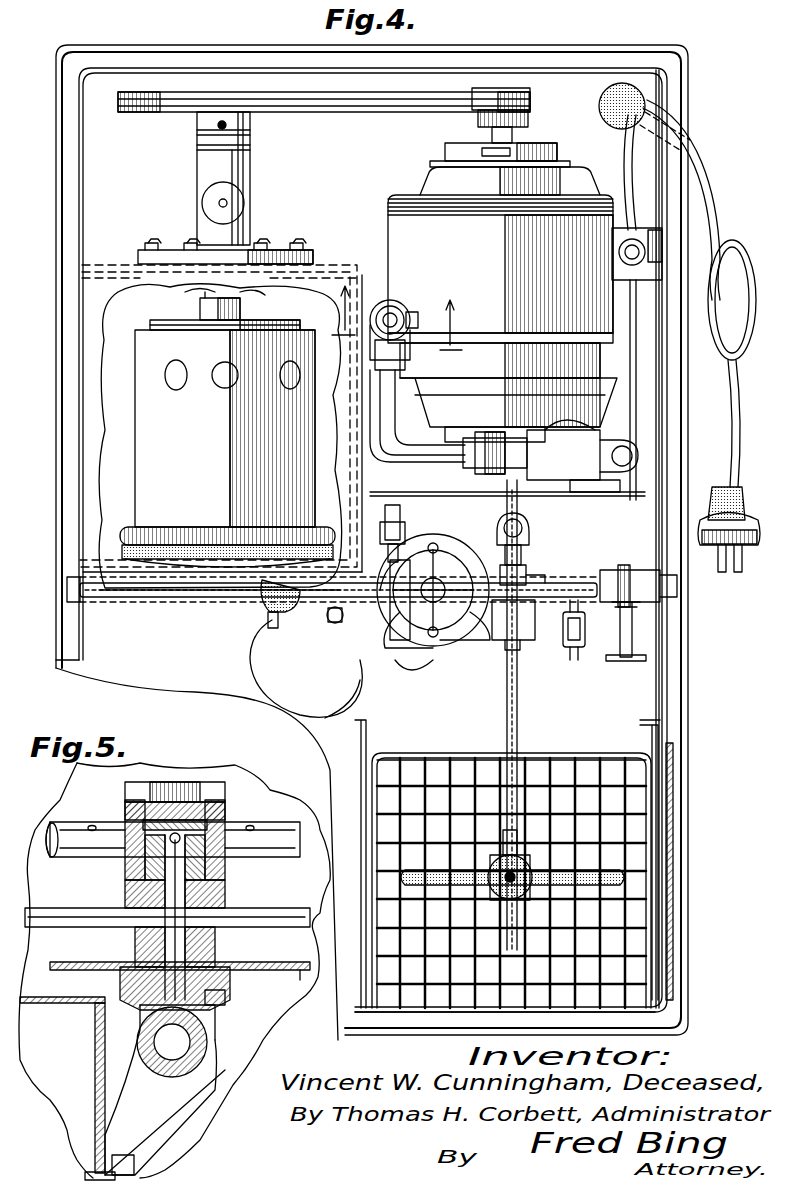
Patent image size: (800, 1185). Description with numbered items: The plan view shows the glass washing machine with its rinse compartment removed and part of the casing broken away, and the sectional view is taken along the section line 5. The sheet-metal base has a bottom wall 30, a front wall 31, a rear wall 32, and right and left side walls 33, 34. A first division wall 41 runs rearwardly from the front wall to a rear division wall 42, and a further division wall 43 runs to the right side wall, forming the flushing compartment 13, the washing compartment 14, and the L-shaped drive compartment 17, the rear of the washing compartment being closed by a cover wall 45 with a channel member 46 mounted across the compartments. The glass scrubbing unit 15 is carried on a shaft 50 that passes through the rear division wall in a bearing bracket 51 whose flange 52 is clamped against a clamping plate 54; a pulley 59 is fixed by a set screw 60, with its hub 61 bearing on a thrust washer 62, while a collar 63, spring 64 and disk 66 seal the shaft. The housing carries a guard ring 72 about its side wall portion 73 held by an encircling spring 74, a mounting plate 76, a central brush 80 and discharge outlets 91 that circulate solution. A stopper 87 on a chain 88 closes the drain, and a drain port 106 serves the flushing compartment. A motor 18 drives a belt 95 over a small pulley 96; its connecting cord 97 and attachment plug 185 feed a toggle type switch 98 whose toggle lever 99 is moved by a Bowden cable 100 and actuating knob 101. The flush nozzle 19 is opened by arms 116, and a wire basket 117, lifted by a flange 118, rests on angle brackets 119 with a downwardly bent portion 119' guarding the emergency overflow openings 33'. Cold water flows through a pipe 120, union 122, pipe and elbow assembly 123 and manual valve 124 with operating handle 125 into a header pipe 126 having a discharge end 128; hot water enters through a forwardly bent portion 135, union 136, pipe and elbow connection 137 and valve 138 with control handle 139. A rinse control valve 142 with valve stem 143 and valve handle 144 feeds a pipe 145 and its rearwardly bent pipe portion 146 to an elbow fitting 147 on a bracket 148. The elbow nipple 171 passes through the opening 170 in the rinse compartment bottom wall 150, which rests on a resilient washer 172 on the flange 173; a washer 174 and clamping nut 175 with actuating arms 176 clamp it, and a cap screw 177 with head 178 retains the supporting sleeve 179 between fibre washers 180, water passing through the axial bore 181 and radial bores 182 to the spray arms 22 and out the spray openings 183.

In FIG. 4, the flushing compartment 13 is at (620, 695).
In FIG. 4, the washing compartment 14 is at (196, 680).
In FIG. 4, the glass scrubbing unit 15 is at (152, 434).
In FIG. 4, the drive compartment 17 is at (582, 113).
In FIG. 4, the motor 18 is at (405, 215).
In FIG. 4, the flush nozzle 19 is at (492, 850).
In FIG. 5, the spray arms 22 is at (69, 817).
In FIG. 4, the bottom wall 30 is at (100, 205).
In FIG. 4, the front wall 31 is at (465, 1012).
In FIG. 4, the rear wall 32 is at (512, 73).
In FIG. 4, the right hand side wall 33 is at (706, 539).
In FIG. 4, the emergency overflow openings 33' is at (700, 871).
In FIG. 4, the left hand side wall 34 is at (80, 620).
In FIG. 4, the first division wall 41 is at (385, 620).
In FIG. 5, the first division wall 41 is at (95, 1085).
In FIG. 4, the rear division wall 42 is at (325, 262).
In FIG. 4, the division wall 43 is at (660, 500).
In FIG. 4, the cover wall 45 is at (662, 591).
In FIG. 5, the cover wall 45 is at (70, 1003).
In FIG. 4, the channel member 46 is at (200, 605).
In FIG. 4, the shaft 50 is at (190, 293).
In FIG. 4, the bearing bracket 51 is at (240, 172).
In FIG. 4, the flange 52 is at (283, 250).
In FIG. 4, the clamping plate 54 is at (305, 270).
In FIG. 4, the pulley 59 is at (315, 108).
In FIG. 4, the set screw 60 is at (218, 127).
In FIG. 4, the hub 61 is at (252, 128).
In FIG. 4, the thrust washer 62 is at (250, 148).
In FIG. 4, the collar 63 is at (200, 308).
In FIG. 4, the spring 64 is at (245, 328).
In FIG. 4, the disk 66 is at (260, 292).
In FIG. 4, the guard ring 72 is at (175, 527).
In FIG. 4, the side wall portion 73 is at (255, 527).
In FIG. 4, the encircling spring 74 is at (205, 545).
In FIG. 4, the mounting plate 76 is at (190, 325).
In FIG. 4, the central brush 80 is at (220, 572).
In FIG. 4, the stopper 87 is at (300, 625).
In FIG. 4, the chain 88 is at (345, 700).
In FIG. 4, the discharge outlets 91 is at (140, 375).
In FIG. 4, the belt 95 is at (385, 108).
In FIG. 4, the pulley 96 is at (475, 88).
In FIG. 4, the connecting cord 97 is at (712, 165).
In FIG. 4, the toggle type switch 98 is at (652, 228).
In FIG. 4, the toggle lever 99 is at (628, 240).
In FIG. 4, the Bowden cable 100 is at (640, 435).
In FIG. 4, the actuating knob 101 is at (633, 640).
In FIG. 4, the drain port 106 is at (443, 660).
In FIG. 4, the arms 116 is at (425, 878).
In FIG. 4, the wire basket 117 is at (560, 755).
In FIG. 4, the flange 118 is at (510, 900).
In FIG. 4, the angle brackets 119 is at (489, 864).
In FIG. 4, the downwardly bent portion 119' is at (631, 715).
In FIG. 4, the pipe 120 is at (507, 712).
In FIG. 4, the union 122 is at (528, 555).
In FIG. 4, the pipe and elbow assembly 123 is at (530, 540).
In FIG. 4, the manual valve 124 is at (520, 585).
In FIG. 4, the operating handle 125 is at (470, 630).
In FIG. 4, the header pipe 126 is at (332, 623).
In FIG. 4, the discharge end 128 is at (255, 600).
In FIG. 4, the forwardly bent portion 135 is at (400, 462).
In FIG. 4, the union 136 is at (405, 540).
In FIG. 4, the pipe and elbow connection 137 is at (440, 545).
In FIG. 4, the valve 138 is at (470, 572).
In FIG. 4, the control handle 139 is at (420, 648).
In FIG. 4, the rinse control valve 142 is at (582, 455).
In FIG. 4, the valve stem 143 is at (570, 645).
In FIG. 4, the valve handle 144 is at (590, 650).
In FIG. 4, the pipe 145 is at (470, 470).
In FIG. 4, the rearwardly bent pipe portion 146 is at (440, 390).
In FIG. 4, the elbow fitting 147 is at (405, 355).
In FIG. 5, the elbow fitting 147 is at (160, 1065).
In FIG. 4, the bracket 148 is at (410, 310).
In FIG. 5, the bracket 148 is at (170, 1100).
In FIG. 5, the bottom wall 150 is at (285, 972).
In FIG. 5, the opening 170 is at (215, 950).
In FIG. 4, the nipple 171 is at (395, 302).
In FIG. 5, the nipple 171 is at (135, 942).
In FIG. 4, the resilient washer 172 is at (405, 302).
In FIG. 5, the resilient washer 172 is at (218, 990).
In FIG. 5, the flange 173 is at (225, 1000).
In FIG. 5, the washer 174 is at (215, 965).
In FIG. 5, the clamping nut 175 is at (205, 890).
In FIG. 5, the actuating arms 176 is at (280, 915).
In FIG. 5, the cap screw 177 is at (175, 782).
In FIG. 5, the head 178 is at (225, 805).
In FIG. 5, the supporting sleeve 179 is at (225, 830).
In FIG. 5, the fibre washers 180 is at (125, 800).
In FIG. 5, the axial bore 181 is at (125, 893).
In FIG. 5, the radial bores 182 is at (125, 865).
In FIG. 5, the spray openings 183 is at (55, 835).
In FIG. 4, the attachment plug 185 is at (738, 530).
In FIG. 4, the section line 5 is at (400, 318).